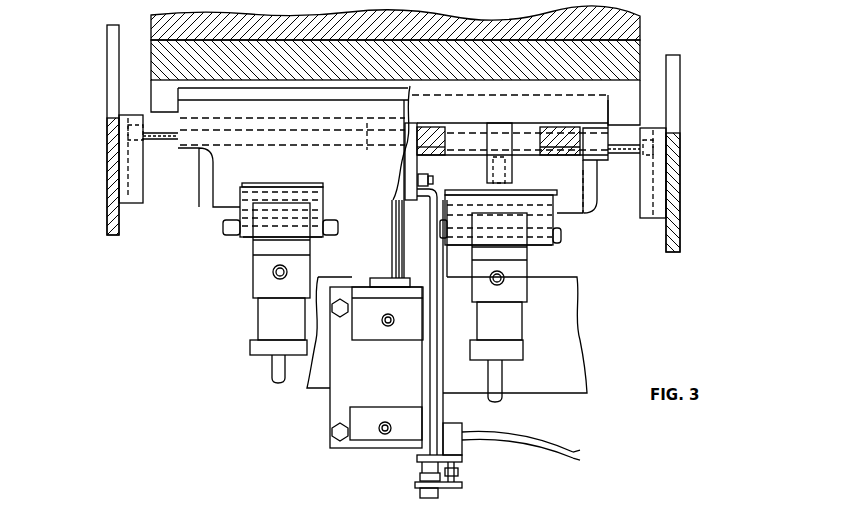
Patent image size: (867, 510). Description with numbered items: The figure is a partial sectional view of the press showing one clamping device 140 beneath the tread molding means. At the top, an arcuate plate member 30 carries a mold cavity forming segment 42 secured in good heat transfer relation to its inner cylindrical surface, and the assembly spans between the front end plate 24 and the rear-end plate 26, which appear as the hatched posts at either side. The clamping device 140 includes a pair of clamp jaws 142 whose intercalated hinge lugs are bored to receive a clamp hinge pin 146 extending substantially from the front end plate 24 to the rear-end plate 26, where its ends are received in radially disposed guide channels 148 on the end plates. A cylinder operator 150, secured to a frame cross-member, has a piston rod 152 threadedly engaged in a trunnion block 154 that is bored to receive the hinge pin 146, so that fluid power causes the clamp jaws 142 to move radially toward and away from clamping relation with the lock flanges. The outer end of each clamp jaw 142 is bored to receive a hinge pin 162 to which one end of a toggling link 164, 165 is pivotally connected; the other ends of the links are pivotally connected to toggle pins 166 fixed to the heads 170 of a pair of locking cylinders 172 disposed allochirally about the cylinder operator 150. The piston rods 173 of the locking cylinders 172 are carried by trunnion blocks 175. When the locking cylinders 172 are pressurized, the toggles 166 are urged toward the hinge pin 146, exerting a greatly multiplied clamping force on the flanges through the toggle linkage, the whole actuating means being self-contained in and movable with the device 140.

The mold cavity forming segment 42 is at (160, 25).
The arcuate plate member 30 is at (160, 61).
The rear-end plate 26 is at (110, 166).
The front end plate 24 is at (676, 182).
The guide channel 148 is at (127, 187).
The clamp hinge pin 146 is at (165, 138).
The clamp jaw 142 is at (228, 158).
The trunnion block 154 is at (420, 168).
The trunnion block 175 is at (500, 145).
The piston rod 173 is at (512, 190).
The piston rod 152 is at (390, 232).
The toggling link 165 is at (250, 195).
The toggling link 164 is at (232, 216).
The toggle pin 166 is at (543, 258).
The head 170 is at (288, 212).
The locking cylinder 172 is at (262, 320).
The clamping device 140 is at (240, 285).
The cylinder operator 150 is at (366, 388).
The hinge pin 162 is at (598, 208).